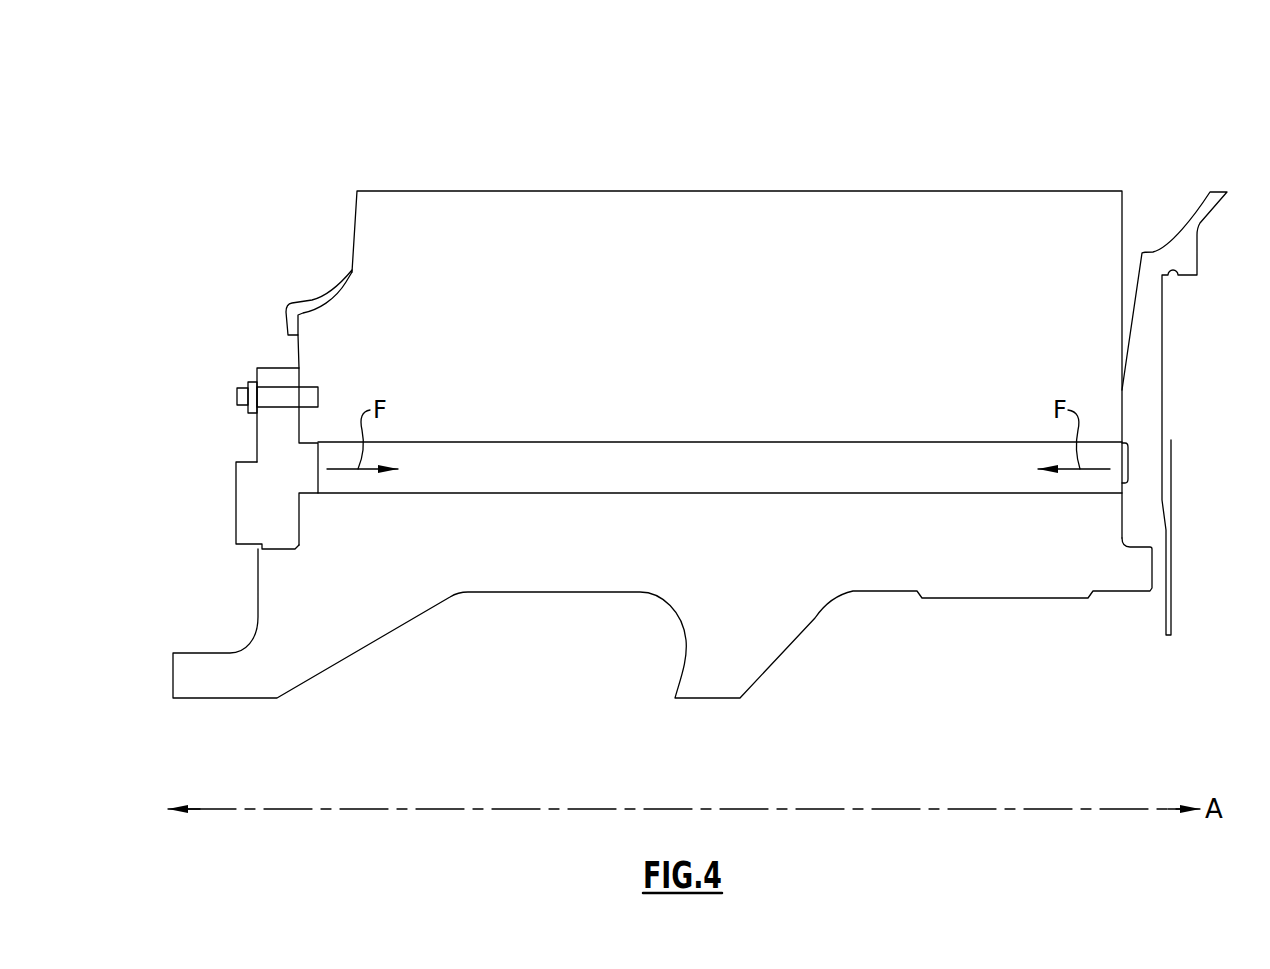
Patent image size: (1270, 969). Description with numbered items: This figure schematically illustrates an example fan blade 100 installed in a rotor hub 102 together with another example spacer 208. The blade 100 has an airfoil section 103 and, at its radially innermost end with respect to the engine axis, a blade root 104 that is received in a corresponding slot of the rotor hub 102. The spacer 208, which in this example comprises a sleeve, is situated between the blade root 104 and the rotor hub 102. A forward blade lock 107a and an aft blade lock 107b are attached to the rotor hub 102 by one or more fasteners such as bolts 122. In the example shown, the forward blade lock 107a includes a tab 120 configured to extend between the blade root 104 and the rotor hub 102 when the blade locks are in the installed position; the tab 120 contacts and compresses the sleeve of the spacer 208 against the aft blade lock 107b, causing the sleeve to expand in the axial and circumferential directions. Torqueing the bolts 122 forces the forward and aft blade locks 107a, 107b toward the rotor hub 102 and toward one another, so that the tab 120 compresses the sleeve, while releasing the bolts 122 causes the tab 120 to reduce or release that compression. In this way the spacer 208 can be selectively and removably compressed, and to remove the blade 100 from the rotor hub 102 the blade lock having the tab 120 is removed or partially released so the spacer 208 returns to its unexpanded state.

The blade 100 is at (436, 120).
The rotor hub 102 is at (955, 558).
The airfoil section 103 is at (954, 212).
The blade root 104 is at (347, 317).
The forward blade lock 107a is at (252, 502).
The aft blade lock 107b is at (1150, 362).
The tab 120 is at (307, 471).
The bolt 122 is at (248, 385).
The spacer 208 is at (577, 443).